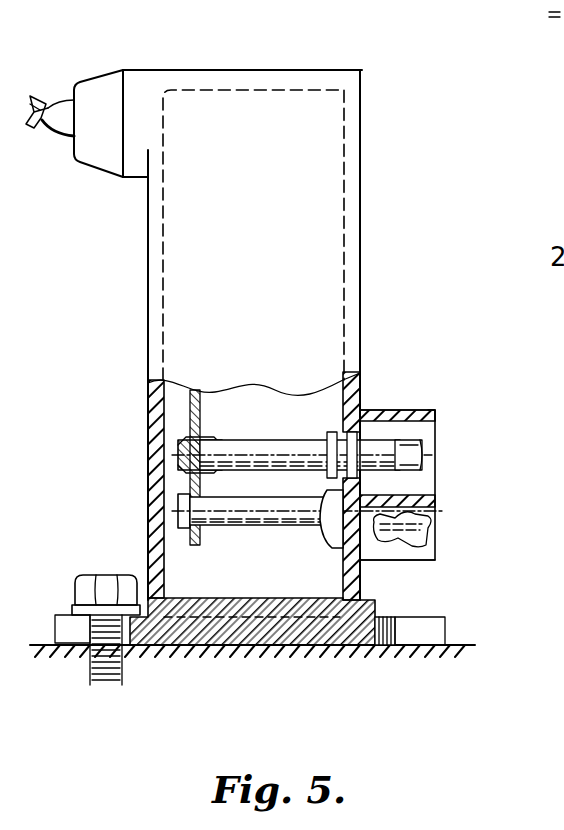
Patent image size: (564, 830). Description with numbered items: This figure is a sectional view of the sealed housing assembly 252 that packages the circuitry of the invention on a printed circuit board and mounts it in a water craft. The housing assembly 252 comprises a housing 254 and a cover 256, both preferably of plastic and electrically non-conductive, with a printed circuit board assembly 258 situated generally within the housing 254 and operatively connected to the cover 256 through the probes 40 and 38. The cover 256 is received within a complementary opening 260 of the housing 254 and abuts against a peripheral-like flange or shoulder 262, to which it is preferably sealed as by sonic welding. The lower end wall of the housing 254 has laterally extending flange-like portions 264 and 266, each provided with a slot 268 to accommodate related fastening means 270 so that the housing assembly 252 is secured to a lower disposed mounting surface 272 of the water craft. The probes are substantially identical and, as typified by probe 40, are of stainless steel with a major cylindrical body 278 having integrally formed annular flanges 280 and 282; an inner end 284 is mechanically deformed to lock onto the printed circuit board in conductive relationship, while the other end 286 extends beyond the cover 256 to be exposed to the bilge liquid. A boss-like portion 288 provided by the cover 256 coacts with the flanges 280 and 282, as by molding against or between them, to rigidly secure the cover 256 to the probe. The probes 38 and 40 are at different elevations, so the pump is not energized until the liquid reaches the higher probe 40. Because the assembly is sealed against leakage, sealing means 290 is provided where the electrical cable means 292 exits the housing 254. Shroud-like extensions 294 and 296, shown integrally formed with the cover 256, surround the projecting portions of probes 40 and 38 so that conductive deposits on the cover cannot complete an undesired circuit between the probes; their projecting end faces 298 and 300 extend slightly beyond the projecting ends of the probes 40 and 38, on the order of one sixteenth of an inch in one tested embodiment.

The housing assembly 252 is at (239, 69).
The housing 254 is at (148, 262).
The cover 256 is at (362, 386).
The printed circuit board assembly 258 is at (206, 398).
The opening 260 is at (366, 93).
The flange or shoulder 262 is at (352, 608).
The flange-like portion 264 is at (60, 630).
The flange-like portion 266 is at (446, 636).
The slot 268 is at (72, 632).
The fastening means 270 is at (103, 574).
The mounting surface 272 is at (220, 642).
The cylindrical body 278 is at (248, 453).
The annular flange 280 is at (332, 436).
The annular flange 282 is at (381, 415).
The inner end 284 is at (178, 452).
The other end 286 is at (424, 472).
The boss-like portion 288 is at (349, 427).
The sealing means 290 is at (103, 88).
The electrical cable means 292 is at (52, 99).
The shroud-like extension 294 is at (436, 410).
The shroud-like extension 296 is at (386, 561).
The end face 298 is at (436, 438).
The end face 300 is at (436, 530).
The probe 38 is at (426, 550).
The probe 40 is at (426, 455).